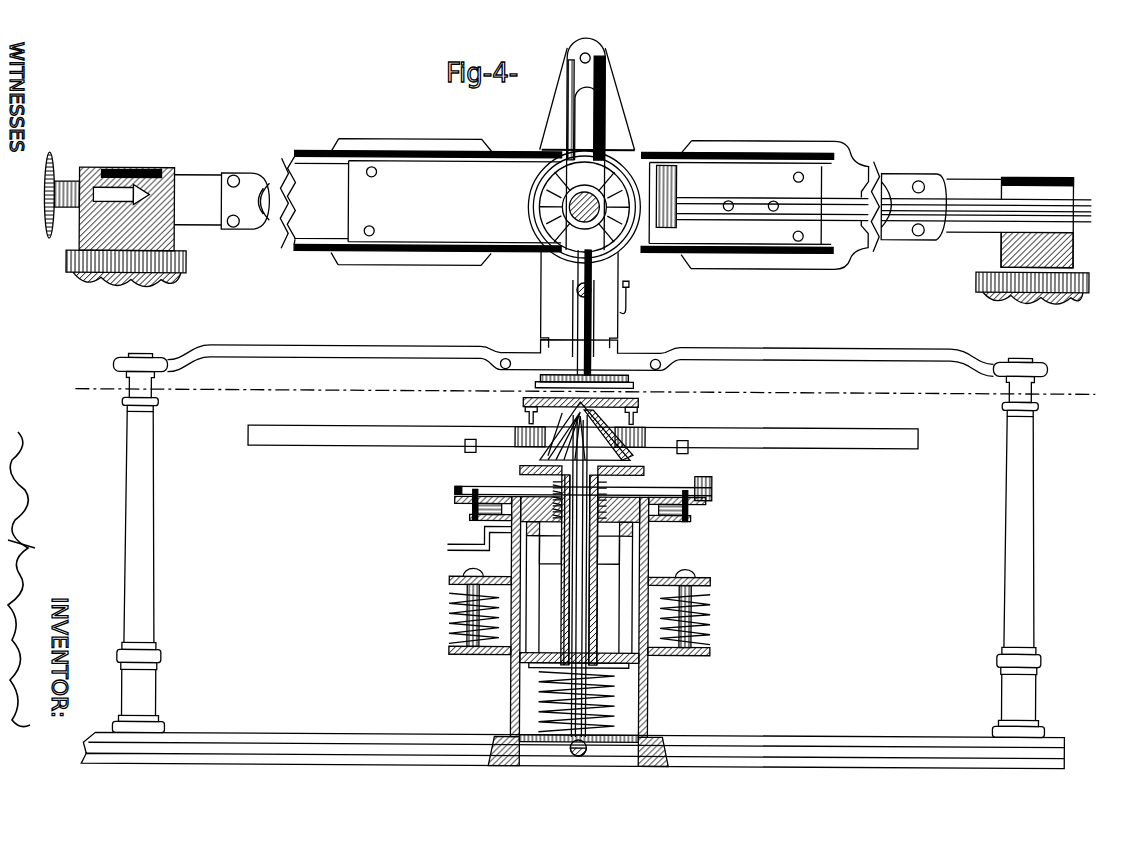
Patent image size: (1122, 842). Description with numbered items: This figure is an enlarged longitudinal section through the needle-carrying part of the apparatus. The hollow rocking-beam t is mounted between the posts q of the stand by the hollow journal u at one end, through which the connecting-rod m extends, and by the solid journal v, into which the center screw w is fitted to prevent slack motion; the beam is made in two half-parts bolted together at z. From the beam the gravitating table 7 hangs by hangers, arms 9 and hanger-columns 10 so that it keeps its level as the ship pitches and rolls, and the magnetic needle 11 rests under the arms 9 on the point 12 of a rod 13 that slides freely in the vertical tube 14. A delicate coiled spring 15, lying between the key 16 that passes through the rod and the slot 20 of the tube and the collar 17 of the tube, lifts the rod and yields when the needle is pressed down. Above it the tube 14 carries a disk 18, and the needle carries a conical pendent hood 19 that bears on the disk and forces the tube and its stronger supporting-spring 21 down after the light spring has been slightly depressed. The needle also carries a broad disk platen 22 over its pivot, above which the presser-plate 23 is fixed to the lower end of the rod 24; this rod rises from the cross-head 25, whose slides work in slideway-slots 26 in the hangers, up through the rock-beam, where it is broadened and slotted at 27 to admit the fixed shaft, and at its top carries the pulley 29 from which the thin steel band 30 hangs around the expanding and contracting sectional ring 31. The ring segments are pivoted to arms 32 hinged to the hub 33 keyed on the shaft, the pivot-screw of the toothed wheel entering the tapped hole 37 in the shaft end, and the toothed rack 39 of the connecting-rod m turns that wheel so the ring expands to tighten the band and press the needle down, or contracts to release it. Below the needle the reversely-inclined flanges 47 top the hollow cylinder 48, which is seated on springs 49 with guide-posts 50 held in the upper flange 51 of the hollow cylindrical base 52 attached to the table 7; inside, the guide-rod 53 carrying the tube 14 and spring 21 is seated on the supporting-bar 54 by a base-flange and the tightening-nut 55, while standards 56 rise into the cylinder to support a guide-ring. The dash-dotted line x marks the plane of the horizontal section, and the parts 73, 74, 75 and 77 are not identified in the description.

The gravitating needle-carrying table 7 is at (820, 738).
The arms 9 is at (580, 348).
The hanger-columns 10 is at (155, 512).
The magnetic needle 11 is at (782, 416).
The point 12 is at (620, 412).
The rod 13 is at (560, 452).
The vertical tube 14 is at (522, 482).
The coiled spring 15 is at (603, 515).
The key 16 is at (580, 510).
The collar 17 is at (581, 553).
The disk 18 is at (642, 470).
The conical pendent hood 19 is at (615, 456).
The slot 20 is at (600, 503).
The supporting-spring 21 is at (600, 683).
The disk platen 22 is at (640, 402).
The presser-plate 23 is at (633, 384).
The rod 24 is at (605, 56).
The cross-head 25 is at (590, 289).
The slideway-slots 26 is at (576, 336).
The slot 27 is at (587, 123).
The pulley 29 is at (584, 44).
The thin steel band 30 is at (622, 110).
The expanding and contracting sectional ring 31 is at (540, 210).
The arm 32 is at (548, 226).
The hub 33 is at (535, 188).
The tapped hole 37 is at (581, 530).
The toothed rack 39 is at (630, 150).
The reversely-inclined flanges 47 is at (712, 483).
The hollow cylinder 48 is at (650, 549).
The springs 49 is at (450, 603).
The guide-posts 50 is at (485, 621).
The upper flange 51 is at (580, 619).
The hollow cylindrical base 52 is at (648, 696).
The guide-rod 53 is at (588, 604).
The supporting-bar 54 is at (600, 729).
The tightening-nut 55 is at (578, 757).
The standards 56 is at (570, 600).
The pin 73 is at (476, 492).
The flange 74 is at (455, 501).
The bracket 75 is at (488, 540).
The tab 77 is at (466, 448).
The section line x is at (584, 392).
The bolted joint z is at (375, 173).
The hollow rocking-beam t is at (800, 146).
The connecting-rod m is at (1090, 208).
The hollow journal u is at (1075, 188).
The solid journal v is at (178, 172).
The center screw w is at (45, 230).
The posts q is at (85, 281).